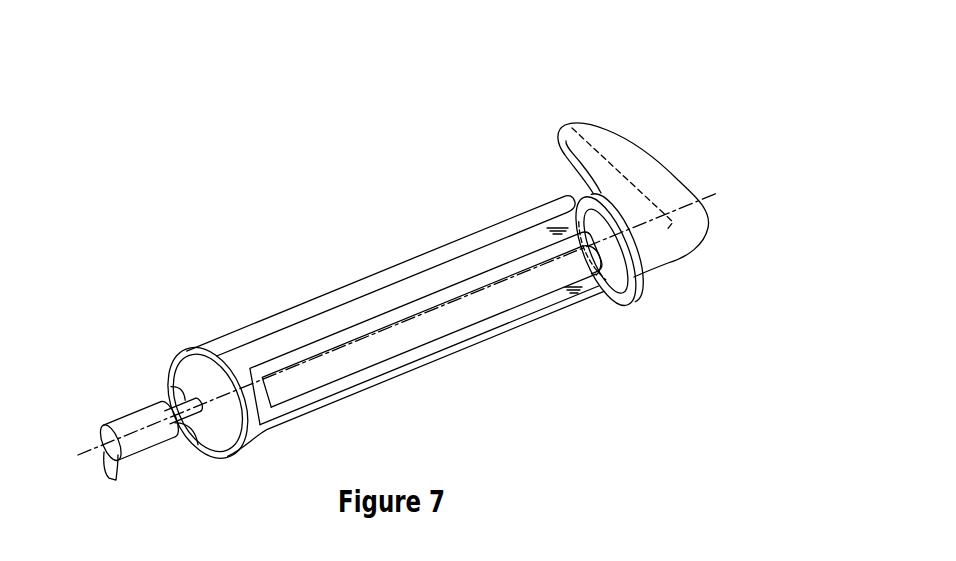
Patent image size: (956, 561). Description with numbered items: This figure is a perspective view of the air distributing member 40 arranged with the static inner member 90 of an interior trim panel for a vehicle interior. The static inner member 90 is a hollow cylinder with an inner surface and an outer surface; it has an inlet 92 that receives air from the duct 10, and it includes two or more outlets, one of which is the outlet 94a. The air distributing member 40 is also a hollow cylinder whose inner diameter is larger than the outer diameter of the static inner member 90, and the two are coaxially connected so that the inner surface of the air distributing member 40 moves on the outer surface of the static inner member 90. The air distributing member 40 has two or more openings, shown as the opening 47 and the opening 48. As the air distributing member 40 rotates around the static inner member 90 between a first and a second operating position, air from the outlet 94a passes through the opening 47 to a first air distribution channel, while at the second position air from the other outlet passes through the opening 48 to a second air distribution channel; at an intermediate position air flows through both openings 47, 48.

The duct 10 is at (645, 148).
The air distributing member 40 is at (552, 226).
The opening 47 is at (448, 340).
The opening 48 is at (358, 298).
The static inner member 90 is at (580, 292).
The inlet 92 is at (633, 271).
The outlet 94a is at (519, 293).